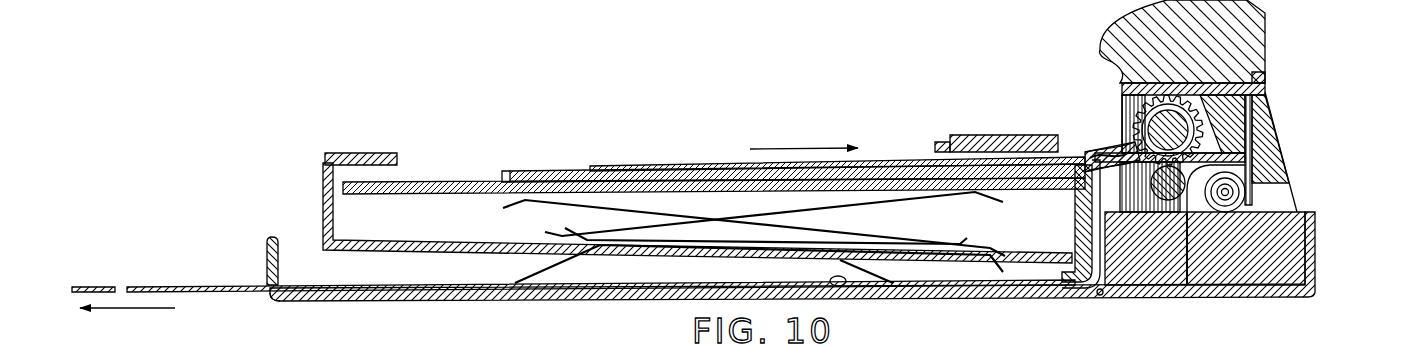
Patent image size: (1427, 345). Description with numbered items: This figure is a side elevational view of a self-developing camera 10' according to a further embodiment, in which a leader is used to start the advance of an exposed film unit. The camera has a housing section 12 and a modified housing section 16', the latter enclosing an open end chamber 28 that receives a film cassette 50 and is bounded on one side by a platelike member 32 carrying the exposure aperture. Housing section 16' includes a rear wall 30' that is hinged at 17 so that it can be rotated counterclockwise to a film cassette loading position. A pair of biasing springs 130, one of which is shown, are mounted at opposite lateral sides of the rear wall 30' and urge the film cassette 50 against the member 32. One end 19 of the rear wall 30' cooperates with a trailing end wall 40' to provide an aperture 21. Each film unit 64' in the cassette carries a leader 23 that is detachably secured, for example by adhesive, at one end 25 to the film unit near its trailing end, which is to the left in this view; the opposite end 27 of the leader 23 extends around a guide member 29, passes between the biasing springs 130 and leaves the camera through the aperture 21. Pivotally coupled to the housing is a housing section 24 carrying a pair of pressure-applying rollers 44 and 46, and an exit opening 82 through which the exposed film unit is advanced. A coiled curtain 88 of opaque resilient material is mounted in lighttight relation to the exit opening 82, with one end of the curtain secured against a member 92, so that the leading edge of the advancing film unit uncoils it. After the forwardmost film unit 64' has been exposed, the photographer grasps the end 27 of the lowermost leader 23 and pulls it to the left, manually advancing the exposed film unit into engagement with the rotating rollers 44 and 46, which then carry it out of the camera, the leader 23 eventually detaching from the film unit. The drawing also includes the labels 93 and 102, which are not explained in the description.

The camera 10' is at (1338, 69).
The housing section 12 is at (1275, 51).
The housing section 16' is at (792, 276).
The hinge 17 is at (1100, 295).
The end of wall 19 is at (270, 297).
The aperture 21 is at (268, 285).
The leader 23 is at (846, 284).
The housing section 24 is at (1326, 256).
The end of leader 25 is at (512, 172).
The opposite end of leader 27 is at (173, 287).
The open end chamber 28 is at (480, 274).
The guide member 29 is at (1082, 228).
The rear wall 30' is at (501, 322).
The platelike member 32 is at (1010, 135).
The trailing end wall 40' is at (237, 222).
The roller 44 is at (1152, 128).
The roller 46 is at (1136, 150).
The film cassette 50 is at (362, 248).
The film unit 64' is at (741, 144).
The exit opening 82 is at (1263, 171).
The curtain 88 is at (1250, 192).
The member 92 is at (1270, 130).
The lower member 93 is at (1043, 339).
The rack guide 102 is at (1125, 108).
The biasing spring 130 is at (672, 258).